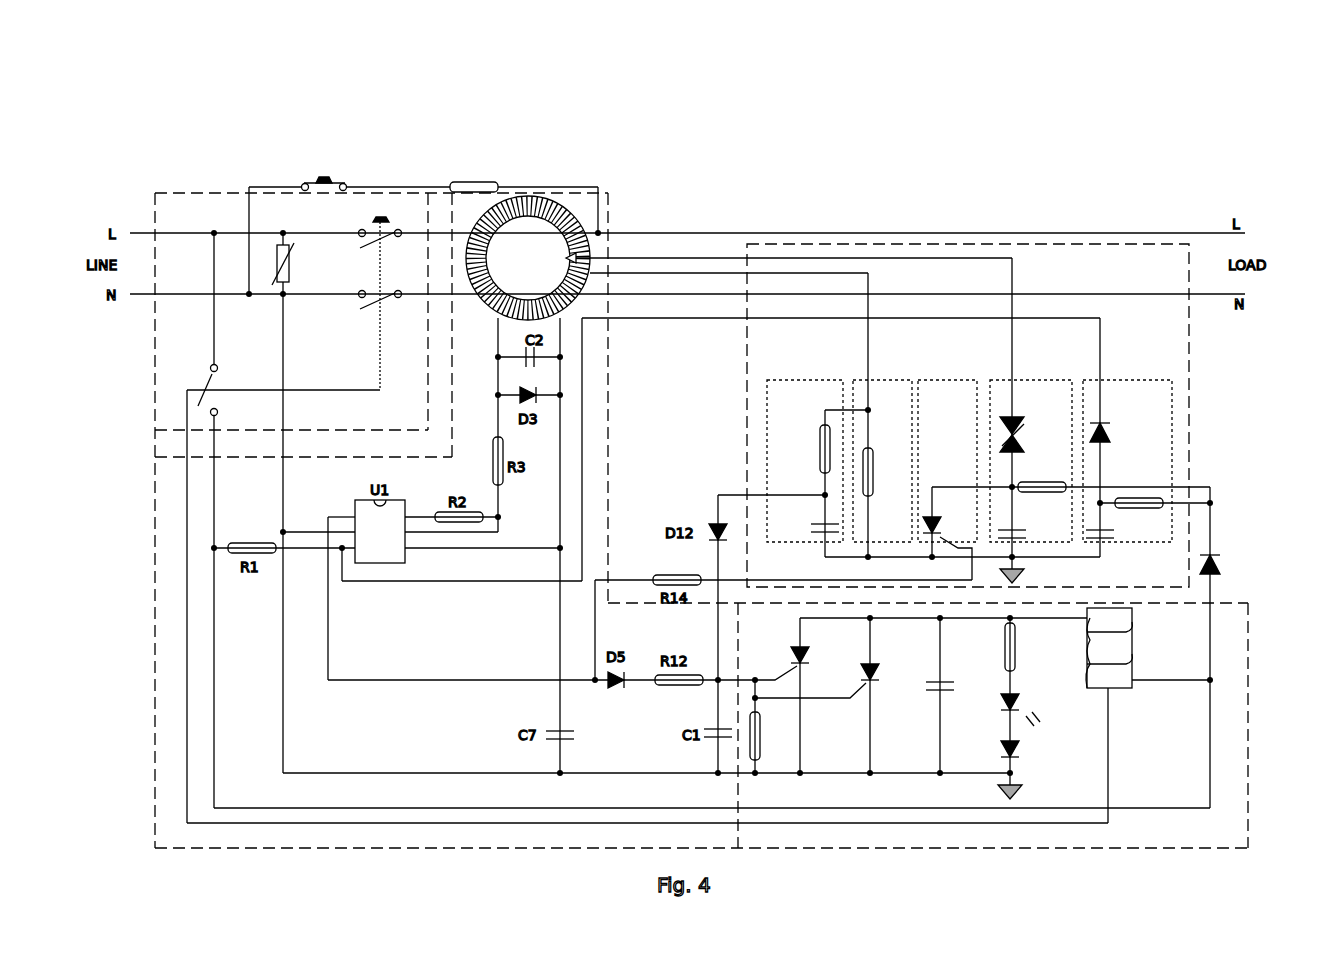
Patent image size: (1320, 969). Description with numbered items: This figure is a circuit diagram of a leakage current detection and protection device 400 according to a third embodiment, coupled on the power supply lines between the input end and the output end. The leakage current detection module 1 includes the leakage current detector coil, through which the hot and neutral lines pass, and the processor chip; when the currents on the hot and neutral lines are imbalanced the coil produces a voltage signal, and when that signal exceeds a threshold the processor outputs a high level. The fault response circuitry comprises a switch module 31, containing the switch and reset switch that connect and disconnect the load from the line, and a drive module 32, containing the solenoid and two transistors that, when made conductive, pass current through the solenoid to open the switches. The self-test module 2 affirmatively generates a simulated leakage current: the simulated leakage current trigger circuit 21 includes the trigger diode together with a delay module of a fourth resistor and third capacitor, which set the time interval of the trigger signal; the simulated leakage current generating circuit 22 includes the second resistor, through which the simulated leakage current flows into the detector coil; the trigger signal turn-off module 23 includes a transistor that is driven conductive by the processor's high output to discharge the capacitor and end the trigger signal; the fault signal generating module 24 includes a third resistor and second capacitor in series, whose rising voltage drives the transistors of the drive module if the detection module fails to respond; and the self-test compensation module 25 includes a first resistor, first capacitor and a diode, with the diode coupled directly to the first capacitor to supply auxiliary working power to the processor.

The ground fault circuit interrupter circuit 400 is at (1306, 52).
The switch module 31 is at (207, 193).
The leakage current detection module 1 is at (525, 193).
The self-test module 2 is at (980, 390).
The fault signal generating module 24 is at (822, 378).
The simulated leakage current generating circuit 22 is at (892, 378).
The trigger signal turn-off module 23 is at (960, 378).
The simulated leakage current trigger circuit 21 is at (1062, 378).
The self-test compensation module 25 is at (1134, 378).
The drive module 32 is at (1250, 650).